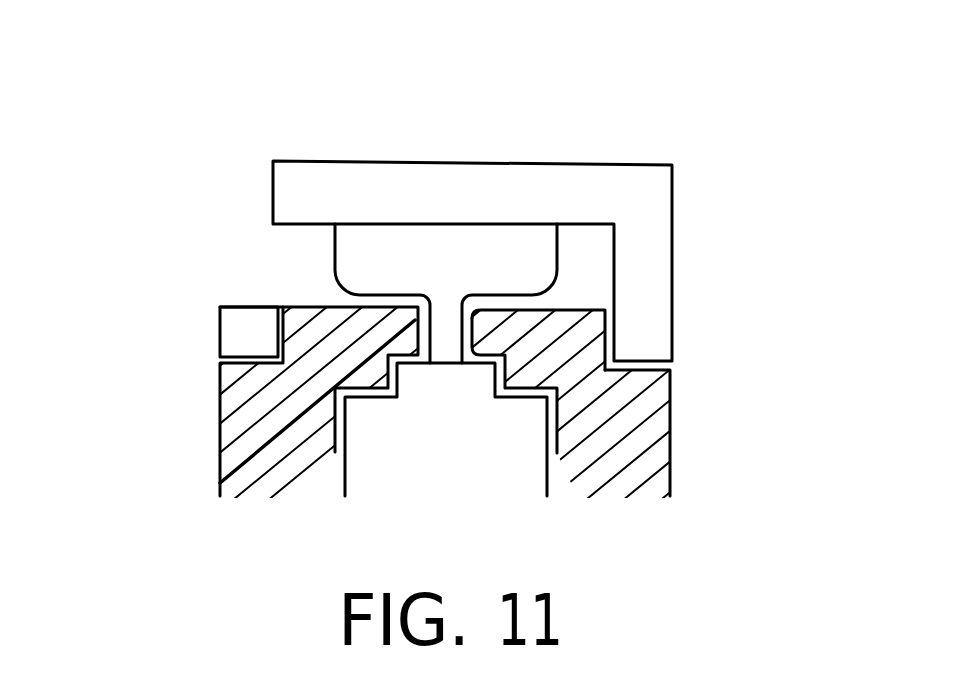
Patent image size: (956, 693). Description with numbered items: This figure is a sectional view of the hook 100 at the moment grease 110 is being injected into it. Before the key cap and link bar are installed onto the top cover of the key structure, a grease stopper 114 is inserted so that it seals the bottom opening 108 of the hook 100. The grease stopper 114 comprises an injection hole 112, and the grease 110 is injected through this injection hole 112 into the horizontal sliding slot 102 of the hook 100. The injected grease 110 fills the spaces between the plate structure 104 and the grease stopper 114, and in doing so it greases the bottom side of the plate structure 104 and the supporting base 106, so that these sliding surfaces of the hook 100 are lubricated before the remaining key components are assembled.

The hook 100 is at (660, 98).
The horizontal sliding slot 102 is at (302, 262).
The plate structure 104 is at (478, 212).
The supporting base 106 is at (238, 327).
The bottom opening 108 is at (277, 365).
The grease 110 is at (478, 280).
The injection hole 112 is at (467, 331).
The grease stopper 114 is at (643, 428).